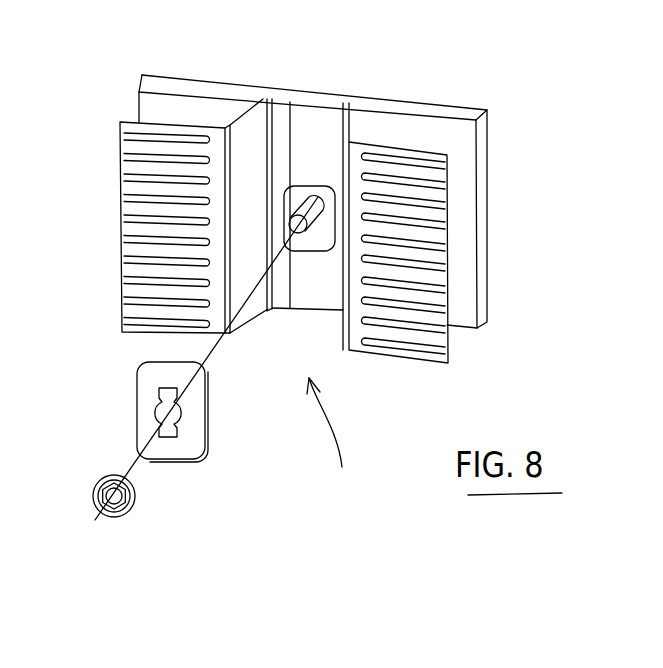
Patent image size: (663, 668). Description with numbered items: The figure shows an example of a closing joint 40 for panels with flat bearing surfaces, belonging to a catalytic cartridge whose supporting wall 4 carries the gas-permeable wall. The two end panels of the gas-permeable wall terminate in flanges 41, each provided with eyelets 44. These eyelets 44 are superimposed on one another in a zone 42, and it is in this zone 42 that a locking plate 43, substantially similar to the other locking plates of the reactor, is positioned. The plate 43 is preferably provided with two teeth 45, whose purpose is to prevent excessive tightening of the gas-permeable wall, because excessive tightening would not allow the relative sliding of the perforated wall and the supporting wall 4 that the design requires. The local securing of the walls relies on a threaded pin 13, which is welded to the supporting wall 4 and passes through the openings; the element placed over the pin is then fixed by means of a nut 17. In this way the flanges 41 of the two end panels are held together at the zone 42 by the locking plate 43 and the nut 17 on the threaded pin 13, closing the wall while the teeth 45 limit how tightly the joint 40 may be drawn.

The supporting wall 4 is at (413, 127).
The flanges 41 is at (253, 122).
The zone 42 is at (312, 127).
The eyelets 44 is at (331, 251).
The threaded pin 13 is at (305, 229).
The closing joint 40 is at (330, 447).
The locking plate 43 is at (195, 438).
The teeth 45 is at (170, 427).
The nut 17 is at (123, 505).